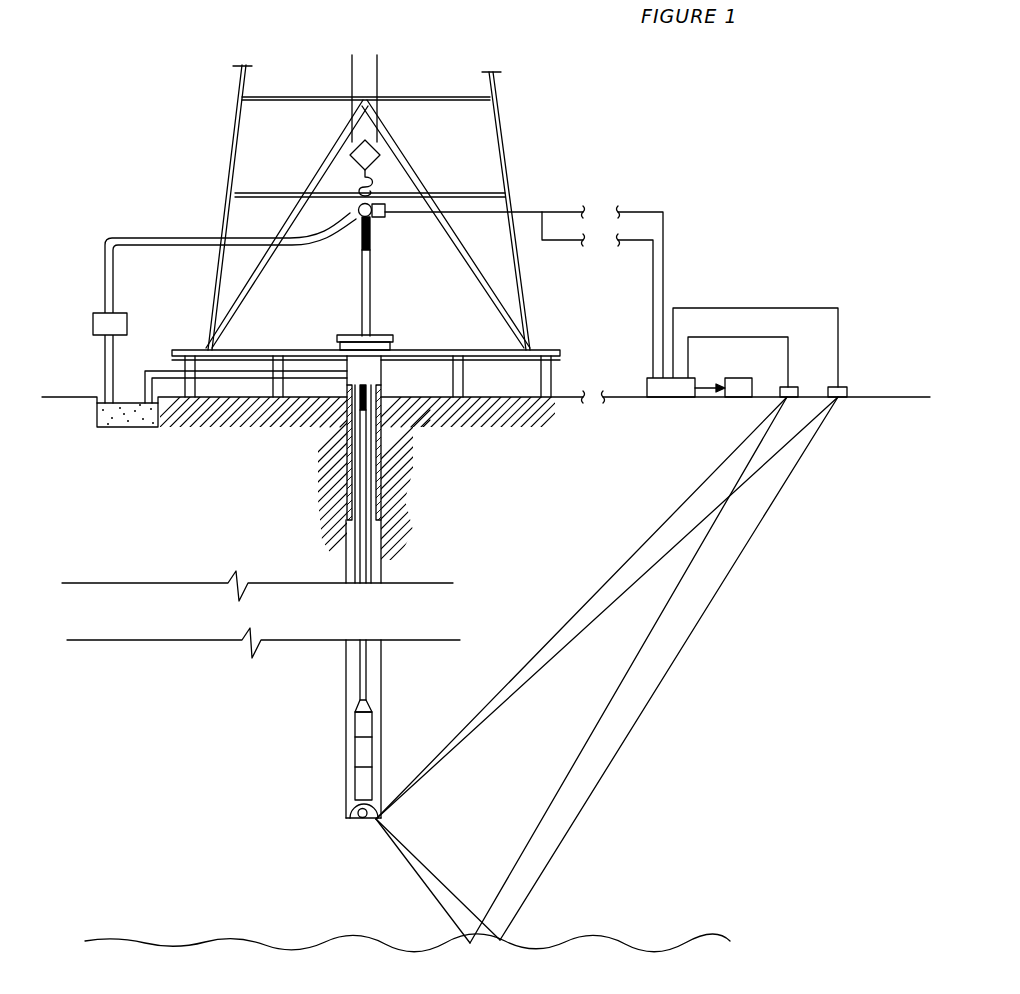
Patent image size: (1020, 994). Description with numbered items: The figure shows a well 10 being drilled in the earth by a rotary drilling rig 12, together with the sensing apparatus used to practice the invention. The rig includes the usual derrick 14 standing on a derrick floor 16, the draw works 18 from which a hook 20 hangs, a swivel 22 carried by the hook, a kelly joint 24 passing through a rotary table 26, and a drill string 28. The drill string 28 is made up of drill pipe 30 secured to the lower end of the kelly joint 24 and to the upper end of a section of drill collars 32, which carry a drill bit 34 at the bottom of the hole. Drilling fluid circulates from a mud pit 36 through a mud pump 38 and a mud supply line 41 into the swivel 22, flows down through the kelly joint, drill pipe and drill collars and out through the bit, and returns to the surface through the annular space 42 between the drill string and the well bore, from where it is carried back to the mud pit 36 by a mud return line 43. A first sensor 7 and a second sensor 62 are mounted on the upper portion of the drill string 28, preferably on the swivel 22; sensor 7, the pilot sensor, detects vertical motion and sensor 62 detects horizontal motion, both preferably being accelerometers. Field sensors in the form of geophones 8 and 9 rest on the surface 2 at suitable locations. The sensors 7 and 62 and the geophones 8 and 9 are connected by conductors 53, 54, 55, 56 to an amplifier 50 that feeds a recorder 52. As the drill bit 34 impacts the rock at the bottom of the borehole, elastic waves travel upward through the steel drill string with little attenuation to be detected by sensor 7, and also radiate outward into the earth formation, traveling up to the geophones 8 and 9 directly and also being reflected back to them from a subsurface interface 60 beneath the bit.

The surface 2 is at (902, 397).
The first sensor 7 is at (382, 198).
The geophone 8 is at (797, 387).
The geophone 9 is at (847, 387).
The well 10 is at (345, 572).
The rotary drilling rig 12 is at (402, 207).
The derrick 14 is at (508, 182).
The derrick floor 16 is at (543, 350).
The draw works 18 is at (352, 72).
The hook 20 is at (375, 168).
The swivel 22 is at (359, 220).
The kelly joint 24 is at (370, 287).
The rotary table 26 is at (393, 337).
The drill string 28 is at (378, 524).
The drill pipe 30 is at (366, 556).
The drill collars 32 is at (364, 720).
The drill bit 34 is at (378, 810).
The mud pit 36 is at (134, 428).
The mud pump 38 is at (127, 313).
The mud supply line 41 is at (293, 247).
The annular space 42 is at (372, 473).
The mud return line 43 is at (293, 377).
The amplifier 50 is at (645, 387).
The recorder 52 is at (748, 387).
The conductor 53 is at (665, 243).
The conductor 54 is at (710, 337).
The conductor 55 is at (767, 308).
The conductor 56 is at (652, 285).
The interface 60 is at (161, 940).
The second sensor 62 is at (375, 222).